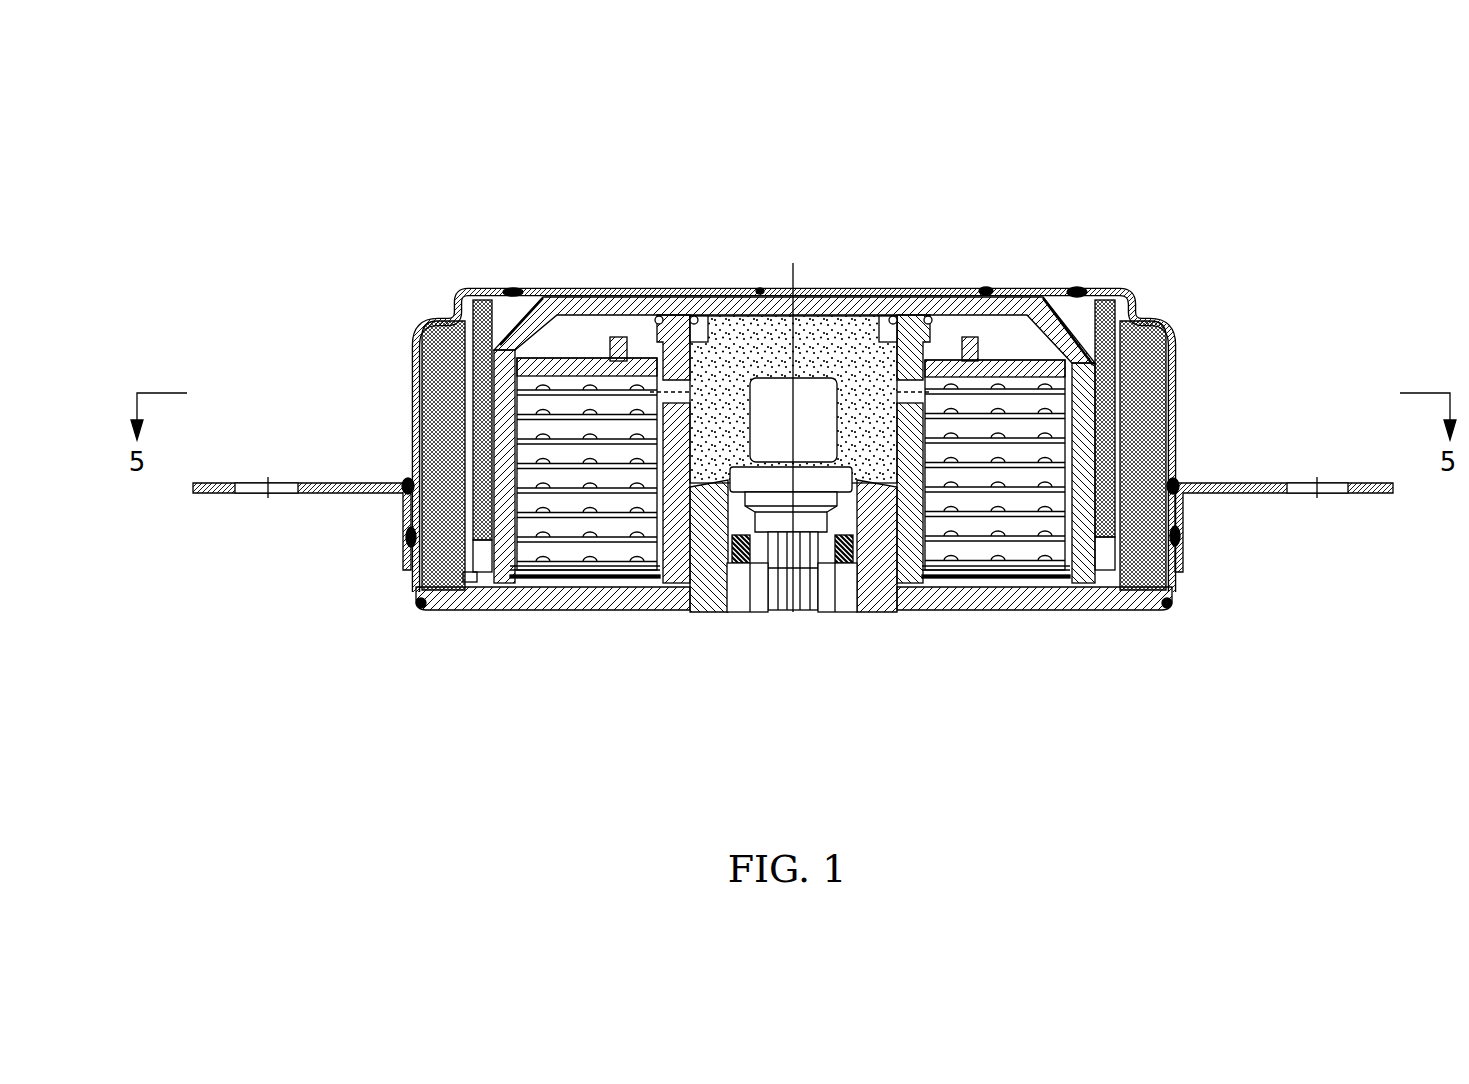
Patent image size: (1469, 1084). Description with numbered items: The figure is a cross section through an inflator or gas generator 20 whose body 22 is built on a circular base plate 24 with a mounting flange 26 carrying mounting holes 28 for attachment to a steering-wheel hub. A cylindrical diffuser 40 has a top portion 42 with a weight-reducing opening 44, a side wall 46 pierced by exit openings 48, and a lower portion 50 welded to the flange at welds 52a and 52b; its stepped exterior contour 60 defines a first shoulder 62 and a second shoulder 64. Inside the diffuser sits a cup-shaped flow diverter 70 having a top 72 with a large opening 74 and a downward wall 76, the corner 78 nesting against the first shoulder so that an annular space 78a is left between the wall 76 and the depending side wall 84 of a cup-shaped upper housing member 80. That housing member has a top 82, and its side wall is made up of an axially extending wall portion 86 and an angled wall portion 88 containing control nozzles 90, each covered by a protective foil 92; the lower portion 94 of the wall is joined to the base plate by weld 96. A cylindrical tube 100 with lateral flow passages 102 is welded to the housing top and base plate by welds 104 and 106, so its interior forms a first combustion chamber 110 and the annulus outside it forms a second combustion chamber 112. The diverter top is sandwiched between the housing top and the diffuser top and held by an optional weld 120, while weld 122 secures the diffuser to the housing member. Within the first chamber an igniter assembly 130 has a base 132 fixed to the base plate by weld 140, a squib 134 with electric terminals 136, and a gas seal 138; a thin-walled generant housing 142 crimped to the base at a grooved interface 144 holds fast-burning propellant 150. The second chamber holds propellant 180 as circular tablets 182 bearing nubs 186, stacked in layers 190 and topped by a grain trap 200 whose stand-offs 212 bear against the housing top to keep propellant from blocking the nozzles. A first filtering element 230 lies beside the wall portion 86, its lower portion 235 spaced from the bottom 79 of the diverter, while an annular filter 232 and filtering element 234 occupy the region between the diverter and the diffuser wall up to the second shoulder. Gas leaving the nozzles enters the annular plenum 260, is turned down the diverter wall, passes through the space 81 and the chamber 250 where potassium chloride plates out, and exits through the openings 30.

The inflator 20 is at (443, 612).
The body 22 is at (1135, 608).
The circular base plate 24 is at (533, 612).
The mounting flange 26 is at (1232, 493).
The mounting holes 28 is at (1317, 493).
The openings 30 is at (1269, 325).
The cylindrical diffuser 40 is at (1100, 278).
The top portion 42 is at (1033, 300).
The opening 44 is at (990, 293).
The side wall 46 is at (1175, 457).
The exit openings 48 is at (1170, 385).
The lower portion of the wall 50 is at (1175, 585).
The weld 52a is at (1182, 538).
The weld 52b is at (1180, 483).
The stepped exterior contour 60 is at (1150, 318).
The first shoulder 62 is at (1130, 315).
The second shoulder 64 is at (1175, 348).
The flow diverter 70 is at (1112, 590).
The top 72 is at (1062, 578).
The large opening 74 is at (1045, 300).
The wall 76 is at (1173, 400).
The corner 78 is at (1117, 298).
The annular space 78a is at (1098, 562).
The bottom of the flow diverter 79 is at (403, 543).
The upper housing member 80 is at (760, 291).
The space 81 is at (412, 577).
The top 82 is at (720, 297).
The depending side wall 84 is at (523, 488).
The axially extending wall portion 86 is at (500, 500).
The angled wall portion 88 is at (548, 303).
The nozzles 90 is at (513, 291).
The protective foil 92 is at (467, 293).
The lower portion of the wall 94 is at (405, 484).
The weld 96 is at (505, 612).
The cylindrical tube 100 is at (670, 297).
The flow passages 102 is at (848, 548).
The weld 104 is at (693, 316).
The weld 106 is at (910, 520).
The first combustion chamber 110 is at (775, 345).
The second combustion chamber 112 is at (570, 337).
The weld 120 is at (1077, 291).
The weld 122 is at (985, 291).
The igniter assembly 130 is at (700, 505).
The base 132 is at (688, 773).
The squib 134 is at (740, 560).
The electric terminals 136 is at (807, 572).
The seal 138 is at (843, 565).
The weld 140 is at (880, 500).
The generant housing 142 is at (897, 320).
The grooved interface 144 is at (685, 578).
The fast-burning propellant 150 is at (823, 345).
The propellant 180 is at (988, 545).
The circular tablets 182 is at (975, 545).
The nubs 186 is at (948, 557).
The layers 190 is at (1013, 709).
The grain trap 200 is at (595, 353).
The stand-offs 212 is at (620, 337).
The first filtering element 230 is at (475, 296).
The annular filter 232 is at (425, 322).
The filtering element 234 is at (413, 583).
The lower portion 235 is at (470, 612).
The chamber 250 is at (452, 612).
The annular plenum 260 is at (422, 328).